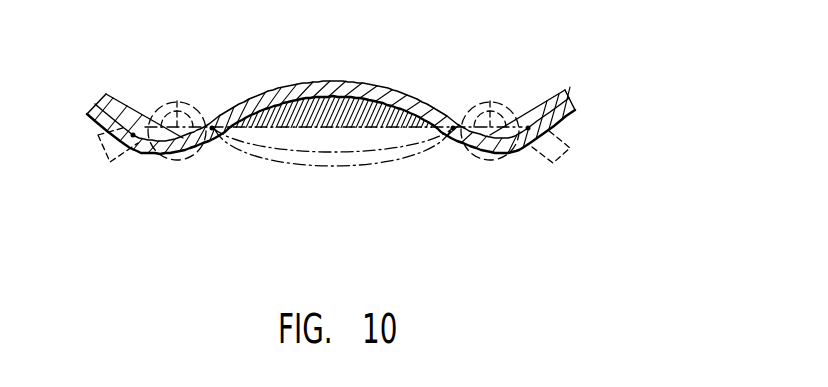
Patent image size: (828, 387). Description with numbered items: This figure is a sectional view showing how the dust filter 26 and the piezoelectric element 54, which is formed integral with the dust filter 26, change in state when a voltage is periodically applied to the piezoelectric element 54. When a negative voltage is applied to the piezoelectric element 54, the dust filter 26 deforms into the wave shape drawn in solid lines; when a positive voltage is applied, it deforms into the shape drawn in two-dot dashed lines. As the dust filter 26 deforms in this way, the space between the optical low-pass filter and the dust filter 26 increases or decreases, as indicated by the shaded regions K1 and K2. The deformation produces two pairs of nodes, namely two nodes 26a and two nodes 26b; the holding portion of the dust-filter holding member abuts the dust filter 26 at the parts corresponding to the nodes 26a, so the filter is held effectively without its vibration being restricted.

The dust filter 26 is at (566, 91).
The nodes 26a is at (133, 137).
The nodes 26b is at (212, 130).
The piezoelectric element 54 is at (577, 106).
The shaded region K1 is at (333, 99).
The shaded region K2 is at (173, 101).